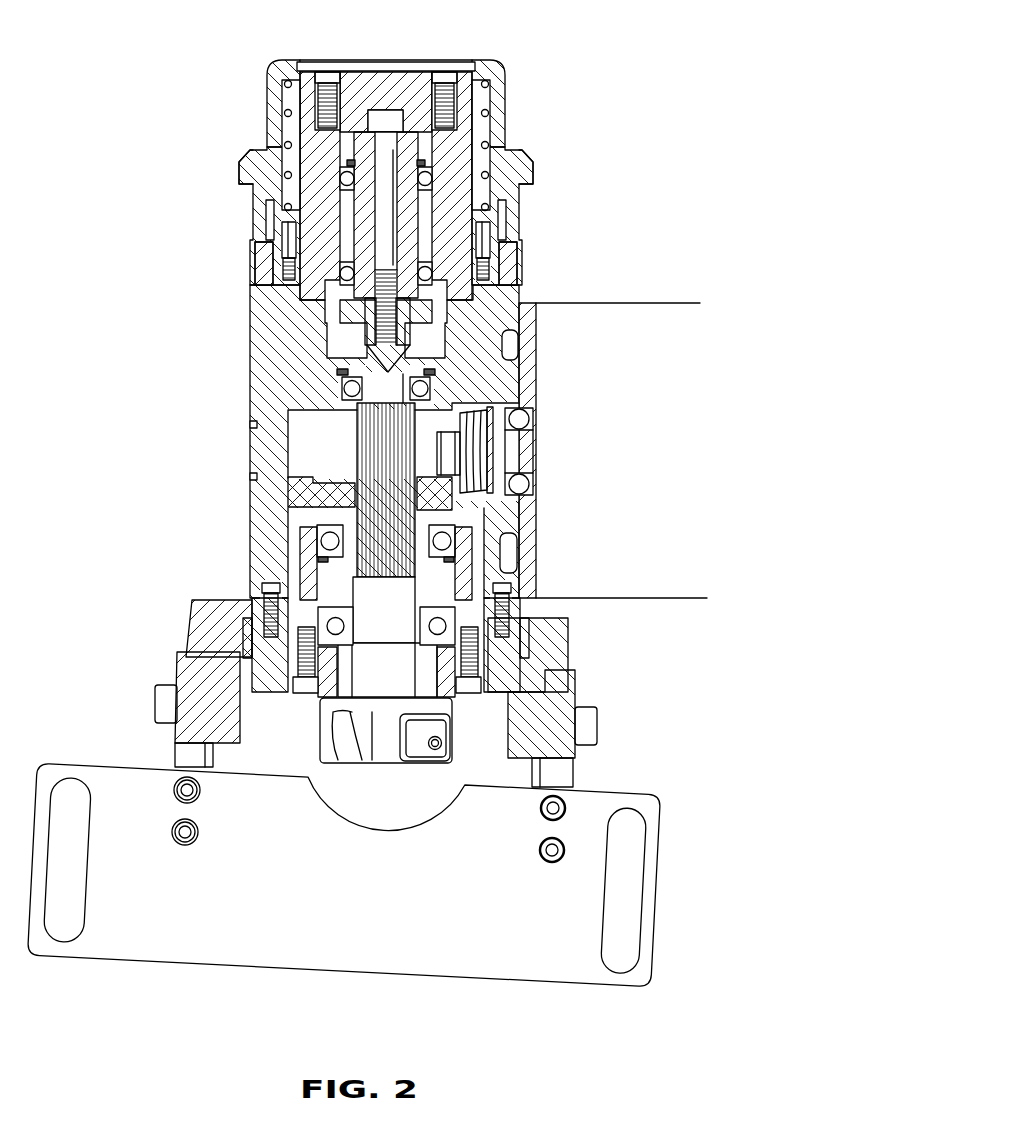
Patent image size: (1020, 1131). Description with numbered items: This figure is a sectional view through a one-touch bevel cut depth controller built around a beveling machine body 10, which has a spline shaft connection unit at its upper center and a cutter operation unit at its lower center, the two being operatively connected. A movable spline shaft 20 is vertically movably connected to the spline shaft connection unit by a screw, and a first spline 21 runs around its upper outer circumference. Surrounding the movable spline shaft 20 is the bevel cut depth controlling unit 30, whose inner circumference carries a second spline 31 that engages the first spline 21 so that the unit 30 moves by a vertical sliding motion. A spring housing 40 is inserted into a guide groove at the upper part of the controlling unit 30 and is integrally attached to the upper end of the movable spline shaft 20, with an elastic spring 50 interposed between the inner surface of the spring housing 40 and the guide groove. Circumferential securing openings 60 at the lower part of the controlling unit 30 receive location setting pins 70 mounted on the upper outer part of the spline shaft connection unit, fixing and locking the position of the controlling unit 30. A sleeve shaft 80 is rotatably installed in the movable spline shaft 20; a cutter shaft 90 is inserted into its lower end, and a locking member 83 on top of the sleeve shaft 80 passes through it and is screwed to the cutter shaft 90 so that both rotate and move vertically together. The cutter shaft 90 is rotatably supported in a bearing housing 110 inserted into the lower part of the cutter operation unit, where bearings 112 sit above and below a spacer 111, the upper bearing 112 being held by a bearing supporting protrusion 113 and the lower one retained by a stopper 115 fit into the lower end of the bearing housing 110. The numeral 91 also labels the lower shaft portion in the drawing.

The beveling machine body 10 is at (280, 318).
The movable spline shaft 20 is at (470, 200).
The first spline 21 is at (497, 130).
The bevel cut depth controlling unit 30 is at (243, 158).
The second spline 31 is at (275, 198).
The spring housing 40 is at (483, 65).
The elastic spring 50 is at (488, 112).
The securing openings 60 is at (512, 222).
The location setting pins 70 is at (260, 250).
The sleeve shaft 80 is at (352, 165).
The locking member 83 is at (385, 118).
The cutter shaft 90 is at (365, 340).
The splined output shaft 91 is at (385, 440).
The bearing housing 110 is at (285, 578).
The spacer 111 is at (318, 545).
The bearings 112 is at (495, 583).
The bearing supporting protrusion 113 is at (300, 490).
The stopper 115 is at (298, 668).